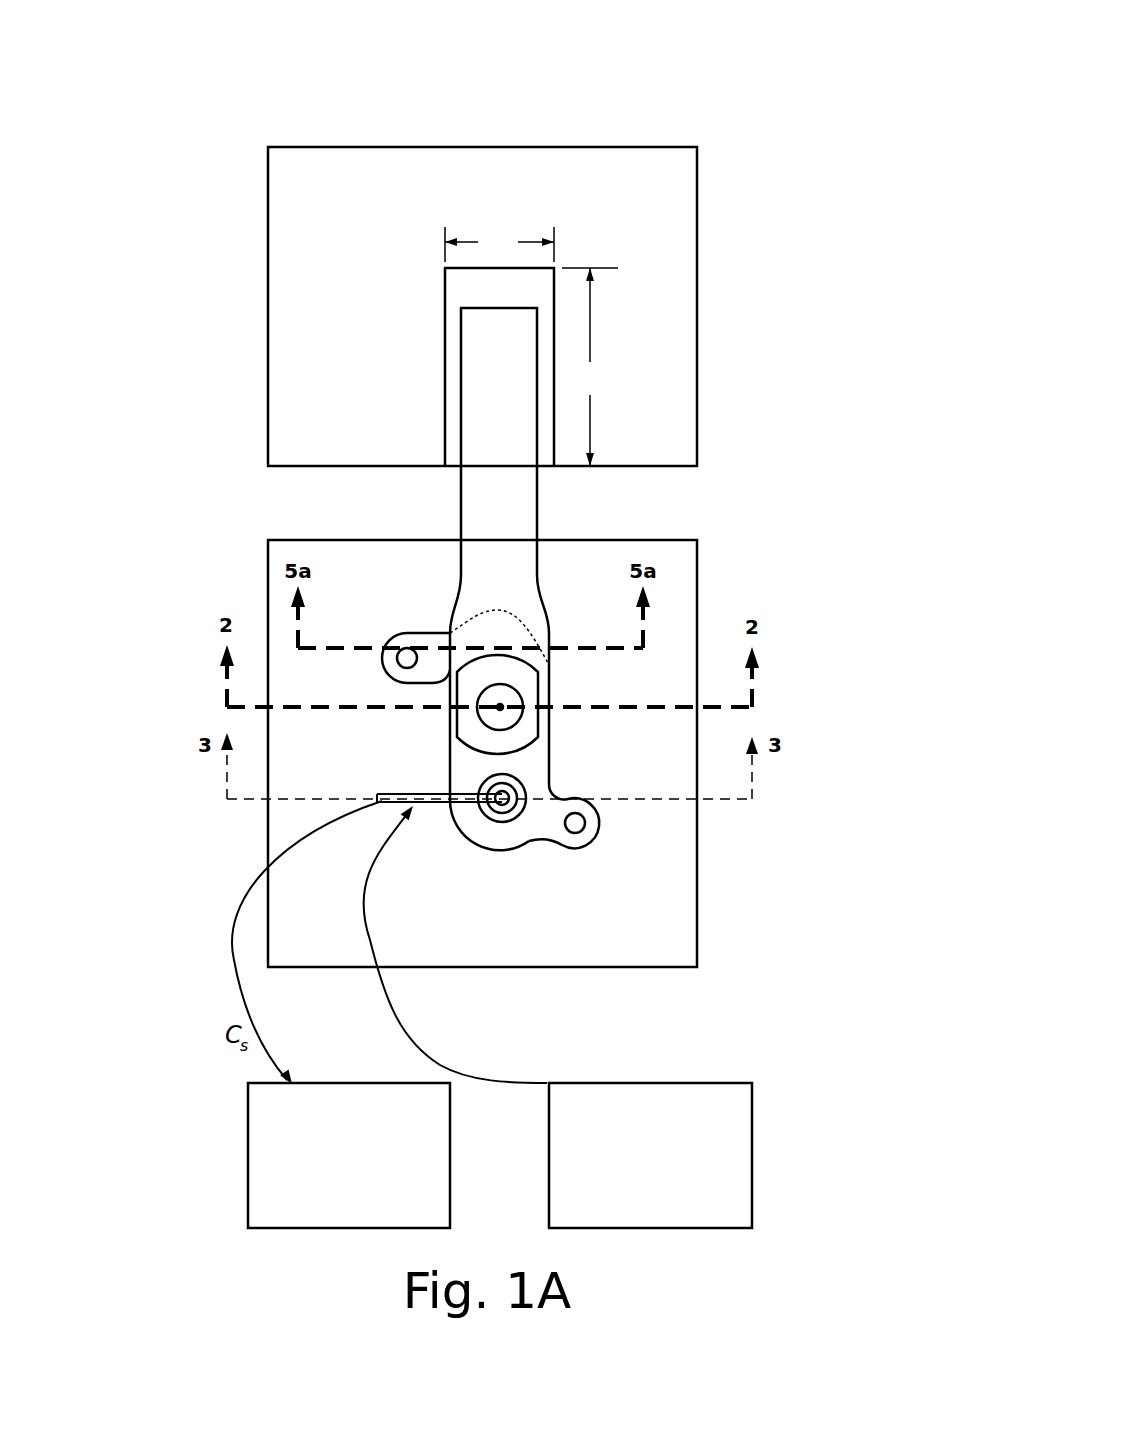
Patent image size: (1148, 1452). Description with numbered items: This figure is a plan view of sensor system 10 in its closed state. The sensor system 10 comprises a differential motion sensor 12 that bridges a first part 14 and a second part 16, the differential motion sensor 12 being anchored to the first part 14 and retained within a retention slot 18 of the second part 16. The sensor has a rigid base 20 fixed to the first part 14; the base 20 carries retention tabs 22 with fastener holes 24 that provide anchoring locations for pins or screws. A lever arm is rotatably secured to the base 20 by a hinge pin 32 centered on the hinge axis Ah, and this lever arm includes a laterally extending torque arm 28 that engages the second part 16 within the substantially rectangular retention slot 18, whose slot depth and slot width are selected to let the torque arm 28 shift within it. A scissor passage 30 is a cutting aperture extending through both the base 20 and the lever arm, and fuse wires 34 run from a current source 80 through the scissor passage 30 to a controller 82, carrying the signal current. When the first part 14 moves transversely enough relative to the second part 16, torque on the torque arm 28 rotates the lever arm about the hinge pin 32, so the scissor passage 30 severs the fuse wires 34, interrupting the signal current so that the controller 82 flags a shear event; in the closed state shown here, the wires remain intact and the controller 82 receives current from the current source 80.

The sensor system 10 is at (730, 106).
The differential motion sensor 12 is at (486, 760).
The first part 14 is at (287, 723).
The second part 16 is at (293, 376).
The retention slot 18 is at (445, 313).
The base 20 is at (438, 687).
The retention tabs 22 is at (400, 633).
The fastener holes 24 is at (401, 662).
The torque arm 28 is at (461, 377).
The scissor passage 30 is at (498, 812).
The hinge pin 32 is at (525, 700).
The fuse wires 34 is at (397, 804).
The current source 80 is at (700, 1083).
The controller 82 is at (398, 1083).